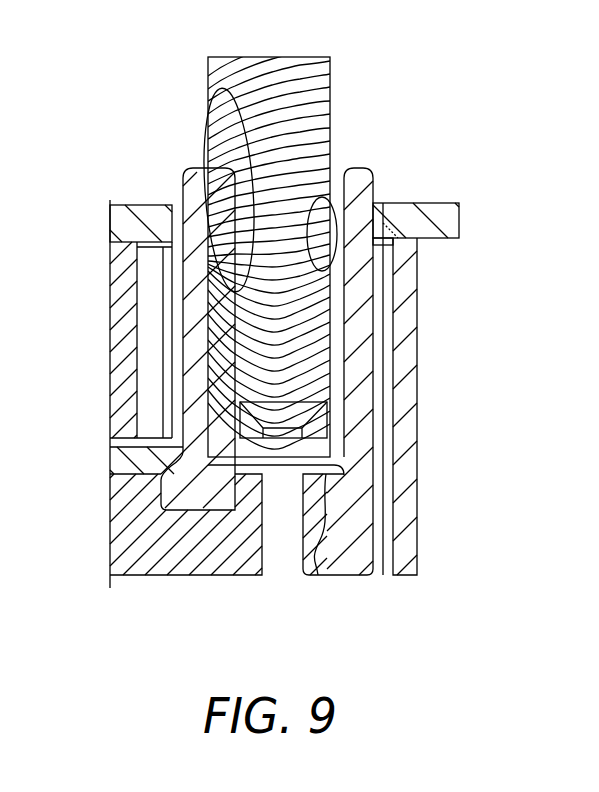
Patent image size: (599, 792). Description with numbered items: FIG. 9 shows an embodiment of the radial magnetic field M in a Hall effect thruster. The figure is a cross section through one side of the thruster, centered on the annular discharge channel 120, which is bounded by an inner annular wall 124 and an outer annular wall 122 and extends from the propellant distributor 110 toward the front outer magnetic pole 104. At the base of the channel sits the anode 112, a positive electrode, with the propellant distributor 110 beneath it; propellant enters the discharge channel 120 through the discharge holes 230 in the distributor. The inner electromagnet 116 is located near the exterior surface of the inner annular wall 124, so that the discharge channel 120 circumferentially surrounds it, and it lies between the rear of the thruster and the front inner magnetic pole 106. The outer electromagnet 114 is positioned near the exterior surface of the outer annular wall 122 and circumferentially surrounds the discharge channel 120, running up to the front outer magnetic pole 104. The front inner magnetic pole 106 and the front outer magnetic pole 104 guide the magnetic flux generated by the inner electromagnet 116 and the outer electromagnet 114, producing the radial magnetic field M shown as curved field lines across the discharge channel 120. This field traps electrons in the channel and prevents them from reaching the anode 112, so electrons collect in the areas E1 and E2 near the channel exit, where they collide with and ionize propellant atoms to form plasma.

The radial magnetic field M is at (203, 52).
The discharge channel 120 is at (268, 156).
The area of high electron density E1 is at (209, 98).
The area of high electron density E2 is at (323, 196).
The inner annular wall 124 is at (191, 167).
The outer annular wall 122 is at (360, 167).
The front outer magnetic pole 104 is at (435, 203).
The outer electromagnet 114 is at (418, 400).
The front inner magnetic pole 106 is at (118, 205).
The inner electromagnet 116 is at (120, 300).
The anode 112 is at (243, 413).
The propellant distributor 110 is at (127, 522).
The discharge holes 230 is at (282, 570).